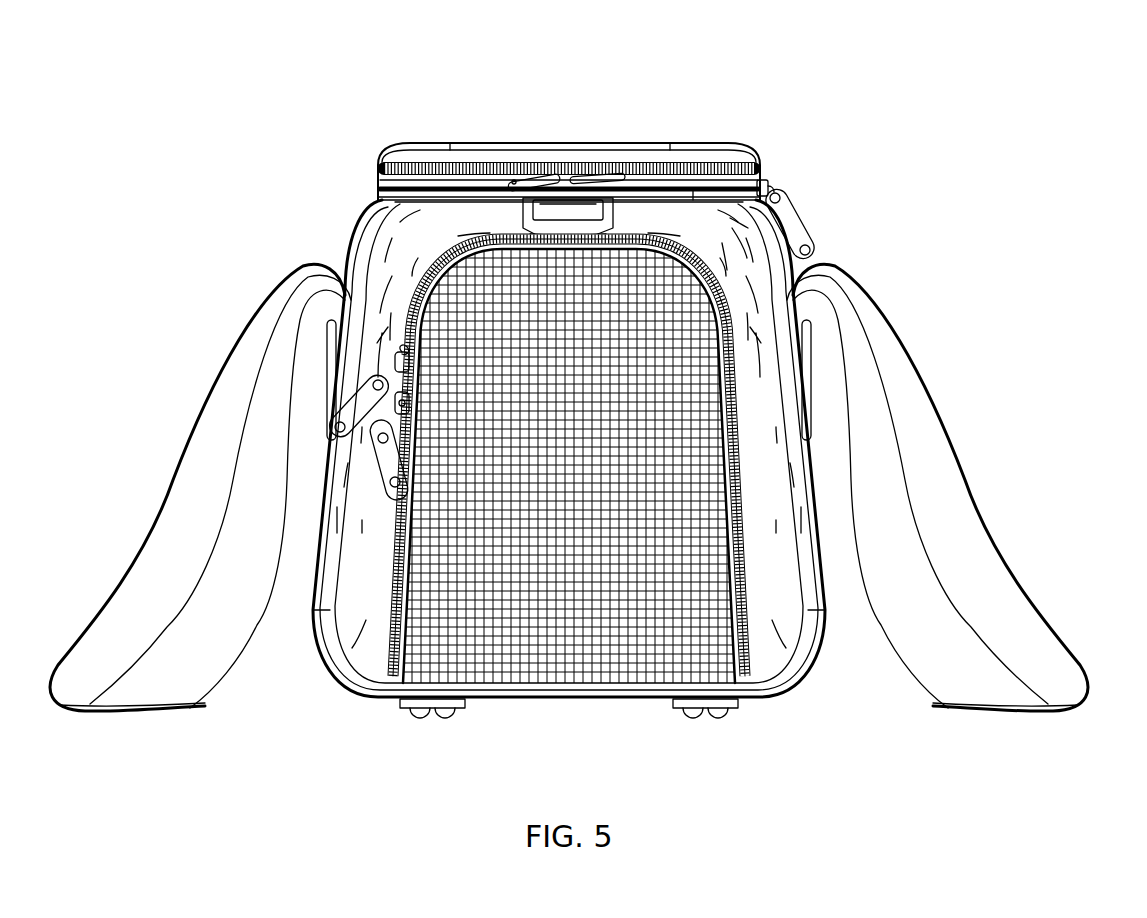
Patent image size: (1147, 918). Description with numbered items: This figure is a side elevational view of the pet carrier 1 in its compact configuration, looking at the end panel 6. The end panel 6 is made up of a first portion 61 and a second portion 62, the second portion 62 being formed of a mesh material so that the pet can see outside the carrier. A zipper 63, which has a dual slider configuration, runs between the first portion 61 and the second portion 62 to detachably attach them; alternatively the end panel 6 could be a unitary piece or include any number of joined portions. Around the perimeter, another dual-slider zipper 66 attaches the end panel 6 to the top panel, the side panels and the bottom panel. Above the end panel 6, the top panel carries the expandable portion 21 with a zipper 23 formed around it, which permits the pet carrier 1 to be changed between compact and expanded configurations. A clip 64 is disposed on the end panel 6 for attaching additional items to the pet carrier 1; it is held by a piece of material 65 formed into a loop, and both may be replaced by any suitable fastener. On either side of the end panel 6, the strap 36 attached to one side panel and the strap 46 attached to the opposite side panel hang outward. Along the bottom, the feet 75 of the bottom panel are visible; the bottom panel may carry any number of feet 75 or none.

The pet carrier 1 is at (355, 178).
The expandable portion 21 is at (697, 155).
The zipper 23 is at (768, 185).
The end panel 6 is at (755, 267).
The second portion 62 is at (765, 328).
The clip 64 is at (627, 230).
The piece of material 65 is at (573, 197).
The zipper 66 is at (563, 183).
The first portion 61 is at (657, 650).
The zipper 63 is at (372, 673).
The feet 75 is at (420, 718).
The strap 46 is at (200, 680).
The strap 36 is at (1007, 577).